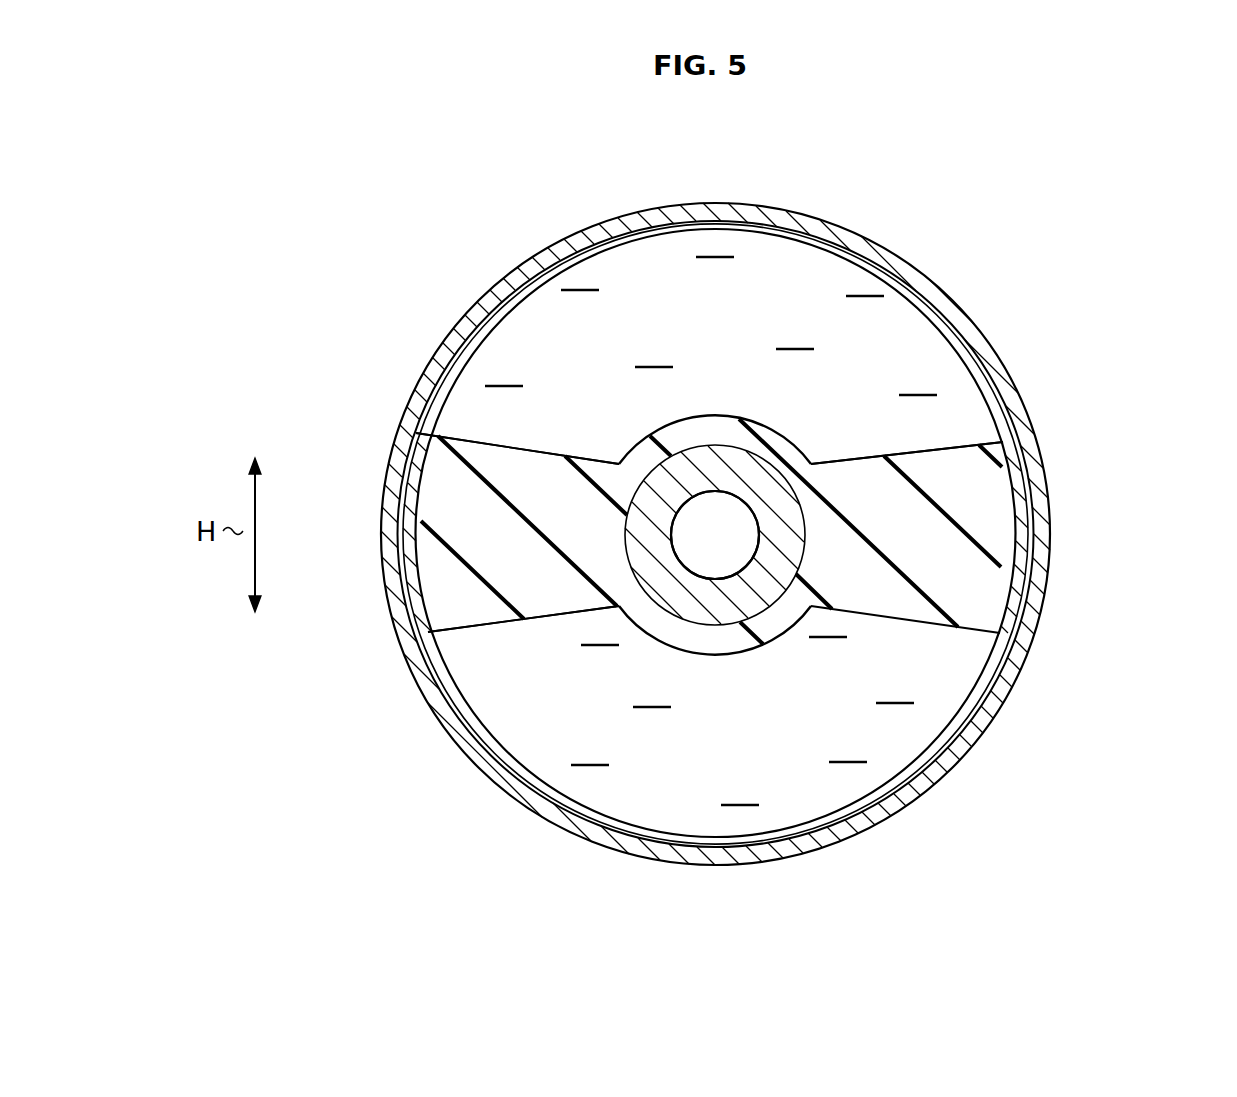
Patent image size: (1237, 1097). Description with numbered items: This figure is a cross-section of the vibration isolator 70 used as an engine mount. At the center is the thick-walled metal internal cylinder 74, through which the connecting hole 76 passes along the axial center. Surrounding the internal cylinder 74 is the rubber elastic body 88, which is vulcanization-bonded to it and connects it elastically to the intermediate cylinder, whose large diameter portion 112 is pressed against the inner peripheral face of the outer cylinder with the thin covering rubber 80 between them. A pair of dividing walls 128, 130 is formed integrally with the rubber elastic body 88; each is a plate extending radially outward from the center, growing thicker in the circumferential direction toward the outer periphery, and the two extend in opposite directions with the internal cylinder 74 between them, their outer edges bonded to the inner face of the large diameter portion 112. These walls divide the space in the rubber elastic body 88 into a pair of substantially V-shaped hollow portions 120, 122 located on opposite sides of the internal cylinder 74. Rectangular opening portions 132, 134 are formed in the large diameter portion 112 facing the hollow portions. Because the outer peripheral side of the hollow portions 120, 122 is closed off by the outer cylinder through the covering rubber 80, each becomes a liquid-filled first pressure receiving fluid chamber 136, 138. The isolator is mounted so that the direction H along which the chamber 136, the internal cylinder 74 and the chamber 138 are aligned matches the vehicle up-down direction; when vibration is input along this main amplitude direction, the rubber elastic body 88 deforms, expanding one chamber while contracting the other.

The vibration isolator 70 is at (1064, 161).
The internal cylinder 74 is at (710, 627).
The connecting hole 76 is at (740, 517).
The covering rubber 80 is at (493, 757).
The rubber elastic body 88 is at (555, 451).
The large diameter portion 112 is at (1022, 536).
The hollow portion 120 is at (942, 444).
The hollow portion 122 is at (465, 632).
The dividing wall 128 is at (907, 468).
The dividing wall 130 is at (547, 601).
The opening portion 132 is at (417, 432).
The opening portion 134 is at (1012, 652).
The first pressure receiving fluid chamber 136 is at (762, 273).
The first pressure receiving fluid chamber 138 is at (657, 777).